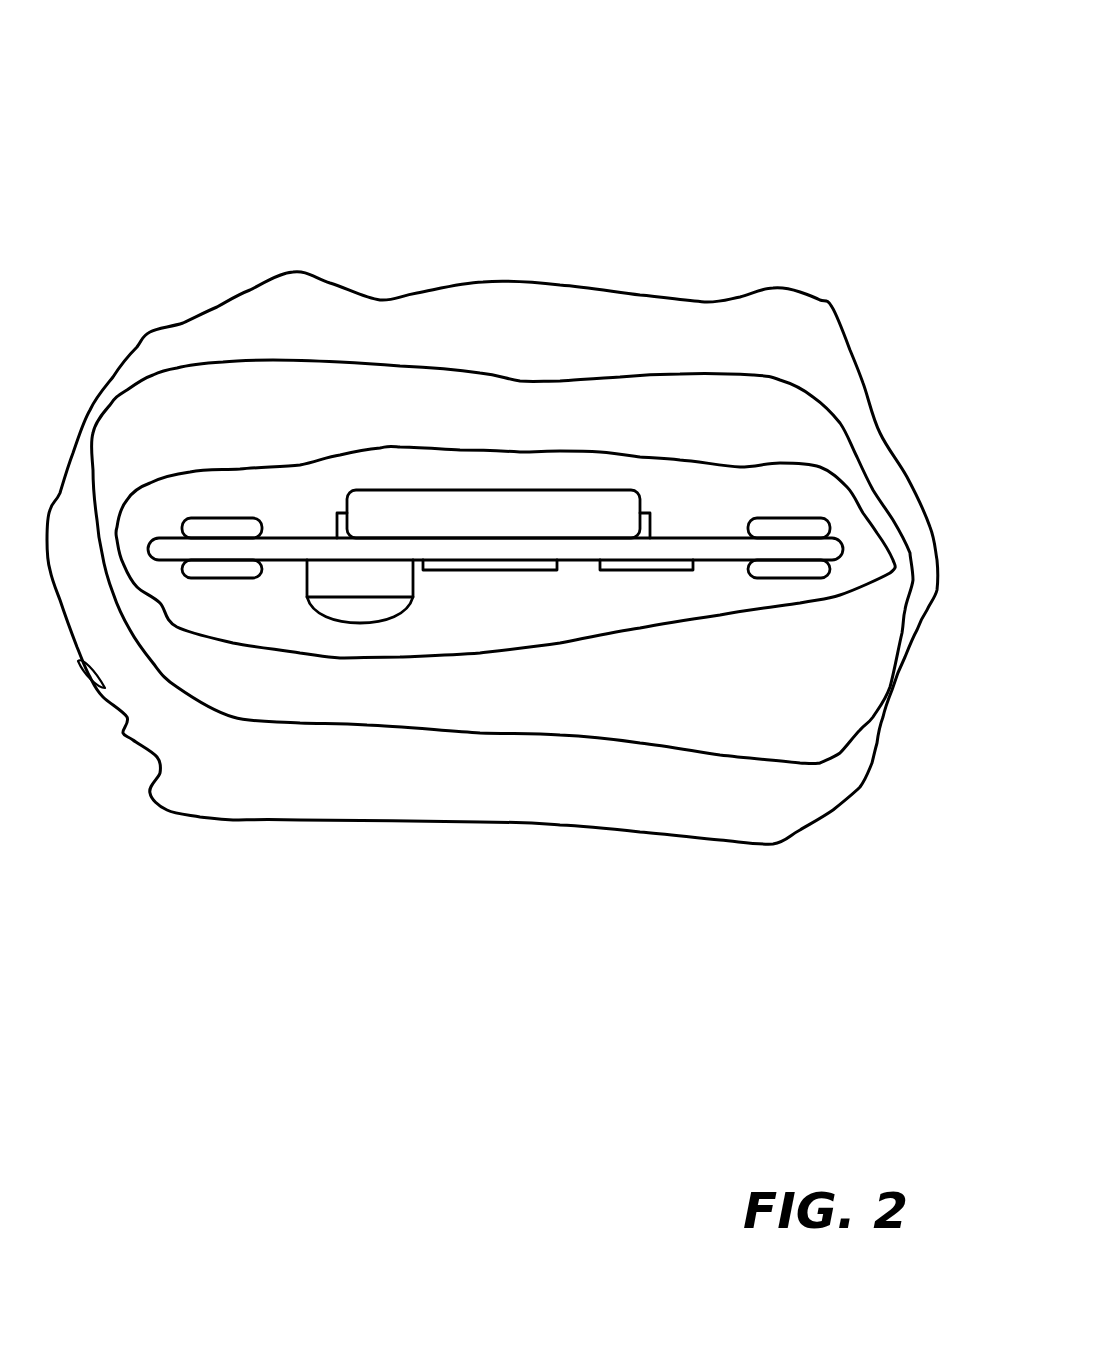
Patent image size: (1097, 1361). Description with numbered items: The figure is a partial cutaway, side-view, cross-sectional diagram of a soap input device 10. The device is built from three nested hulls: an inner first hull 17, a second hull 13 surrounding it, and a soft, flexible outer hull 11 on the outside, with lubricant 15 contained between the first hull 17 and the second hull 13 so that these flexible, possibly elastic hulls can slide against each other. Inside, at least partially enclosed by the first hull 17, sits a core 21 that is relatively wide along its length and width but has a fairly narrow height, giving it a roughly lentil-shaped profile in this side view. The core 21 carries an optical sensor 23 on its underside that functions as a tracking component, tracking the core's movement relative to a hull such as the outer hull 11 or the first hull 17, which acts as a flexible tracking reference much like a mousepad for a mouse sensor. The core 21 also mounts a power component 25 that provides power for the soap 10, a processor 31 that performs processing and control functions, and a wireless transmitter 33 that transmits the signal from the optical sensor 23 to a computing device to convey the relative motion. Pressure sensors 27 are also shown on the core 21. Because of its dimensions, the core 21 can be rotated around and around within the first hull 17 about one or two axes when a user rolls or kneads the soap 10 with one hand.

The soap input device 10 is at (862, 103).
The outer hull 11 is at (832, 307).
The second hull 13 is at (177, 366).
The lubricant 15 is at (166, 437).
The first hull 17 is at (322, 456).
The core 21 is at (683, 537).
The optical sensor 23 is at (360, 624).
The power component 25 is at (565, 489).
The pressure sensors 27 is at (207, 517).
The processor 31 is at (485, 571).
The wireless transmitter 33 is at (637, 571).